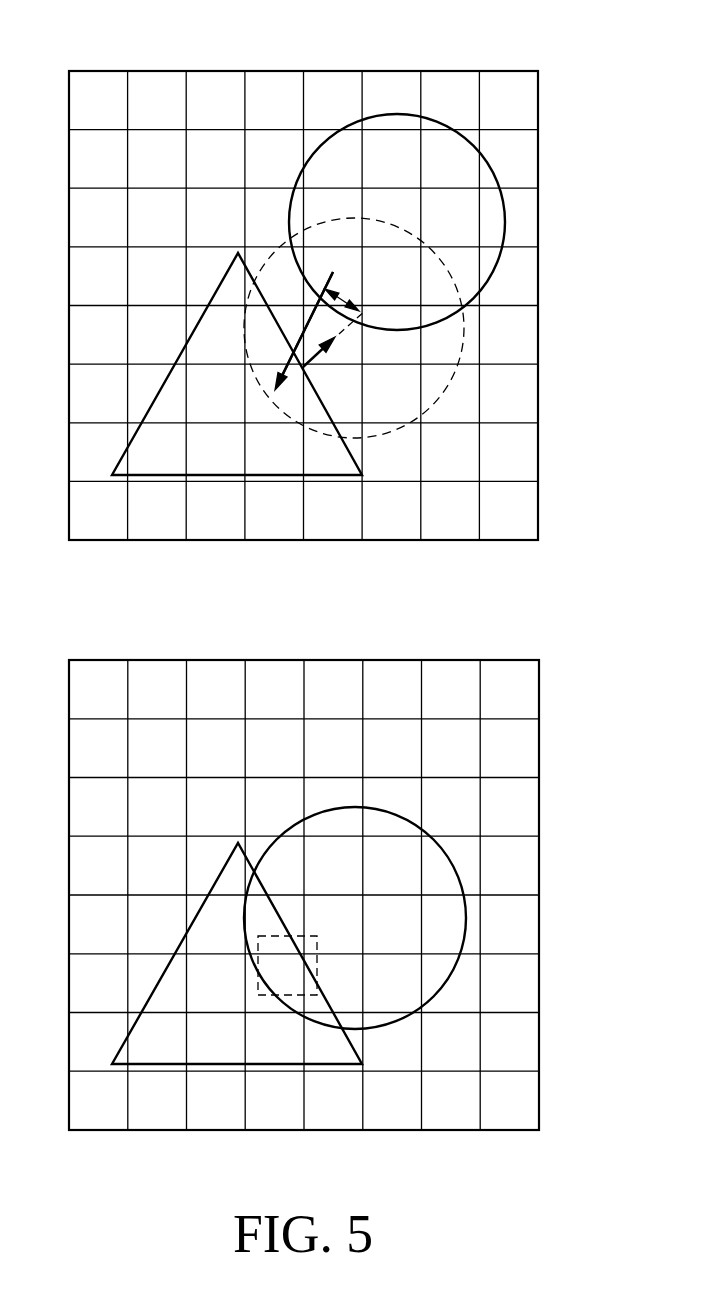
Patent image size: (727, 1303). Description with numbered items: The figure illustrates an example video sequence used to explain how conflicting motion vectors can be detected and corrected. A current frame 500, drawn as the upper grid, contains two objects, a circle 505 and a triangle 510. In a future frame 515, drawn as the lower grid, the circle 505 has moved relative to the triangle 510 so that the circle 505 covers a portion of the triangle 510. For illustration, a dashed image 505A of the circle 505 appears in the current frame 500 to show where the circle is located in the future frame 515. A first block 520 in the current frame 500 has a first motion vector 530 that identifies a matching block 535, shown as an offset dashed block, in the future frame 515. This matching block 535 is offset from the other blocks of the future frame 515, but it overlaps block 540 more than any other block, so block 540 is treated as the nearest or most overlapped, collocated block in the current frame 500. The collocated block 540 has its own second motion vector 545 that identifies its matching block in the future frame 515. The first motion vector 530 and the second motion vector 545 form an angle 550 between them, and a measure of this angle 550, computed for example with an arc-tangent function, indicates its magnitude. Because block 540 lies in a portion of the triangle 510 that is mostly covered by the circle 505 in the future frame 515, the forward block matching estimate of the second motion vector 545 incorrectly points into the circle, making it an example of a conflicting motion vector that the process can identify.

The current frame 500 is at (522, 48).
The circle 505 is at (493, 175).
The dashed image of the circle 505A is at (463, 348).
The triangle 510 is at (157, 477).
The future frame 515 is at (522, 638).
The first block 520 is at (345, 275).
The first motion vector 530 is at (308, 318).
The matching block 535 is at (287, 945).
The collocated block 540 is at (261, 417).
The second motion vector 545 is at (315, 357).
The angle 550 is at (343, 297).